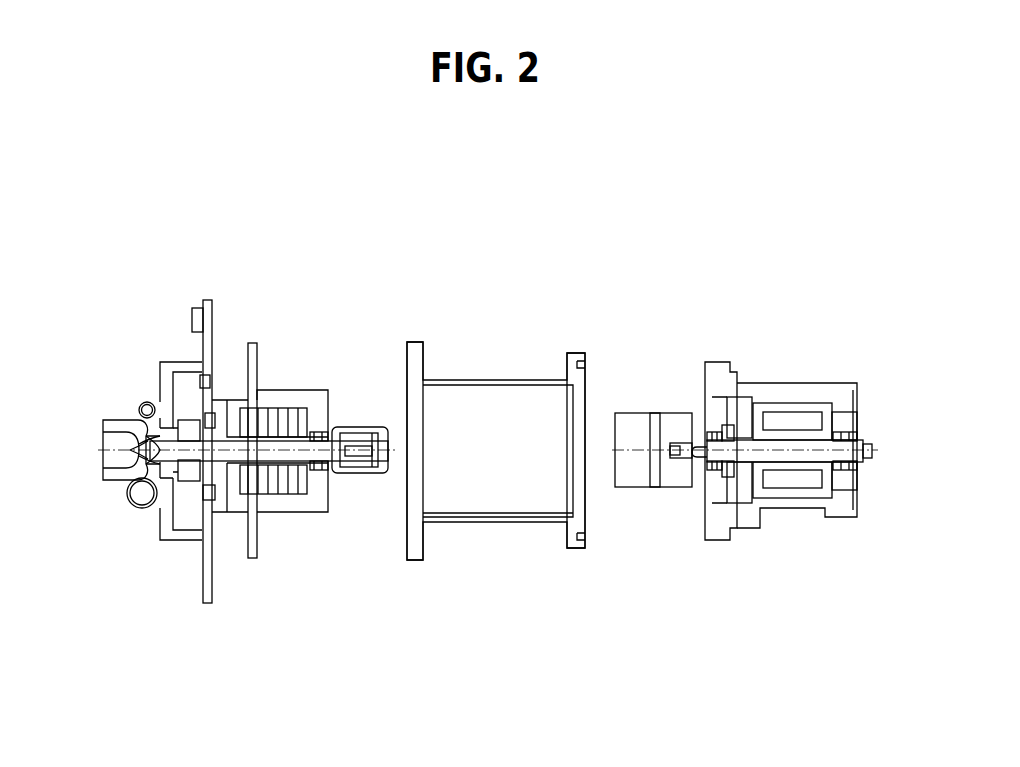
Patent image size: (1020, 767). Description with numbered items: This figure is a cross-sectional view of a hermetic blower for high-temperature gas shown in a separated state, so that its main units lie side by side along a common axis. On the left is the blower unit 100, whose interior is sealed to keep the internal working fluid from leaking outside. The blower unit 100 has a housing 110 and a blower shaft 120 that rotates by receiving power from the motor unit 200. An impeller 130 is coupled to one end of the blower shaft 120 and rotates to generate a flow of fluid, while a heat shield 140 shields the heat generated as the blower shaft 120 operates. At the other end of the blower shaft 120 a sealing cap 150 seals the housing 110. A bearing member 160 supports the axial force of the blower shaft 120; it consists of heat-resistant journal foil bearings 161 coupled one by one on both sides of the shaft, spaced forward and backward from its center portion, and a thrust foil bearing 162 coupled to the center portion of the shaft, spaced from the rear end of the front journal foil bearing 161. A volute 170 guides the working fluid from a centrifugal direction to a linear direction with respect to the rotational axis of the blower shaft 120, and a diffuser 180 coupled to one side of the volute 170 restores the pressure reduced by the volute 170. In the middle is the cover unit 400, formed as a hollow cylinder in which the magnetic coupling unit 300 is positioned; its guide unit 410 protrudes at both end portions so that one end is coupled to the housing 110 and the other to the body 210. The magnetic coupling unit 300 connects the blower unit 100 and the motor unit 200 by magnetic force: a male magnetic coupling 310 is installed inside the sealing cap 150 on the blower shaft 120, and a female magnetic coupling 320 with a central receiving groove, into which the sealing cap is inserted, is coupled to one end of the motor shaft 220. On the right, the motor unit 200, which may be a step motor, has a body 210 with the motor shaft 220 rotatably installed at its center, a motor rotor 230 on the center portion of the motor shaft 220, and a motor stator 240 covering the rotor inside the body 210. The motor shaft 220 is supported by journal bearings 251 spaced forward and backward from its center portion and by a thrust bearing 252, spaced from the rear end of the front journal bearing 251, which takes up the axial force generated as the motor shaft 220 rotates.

The blower unit 100 is at (252, 347).
The housing 110 is at (309, 400).
The blower shaft 120 is at (292, 453).
The impeller 130 is at (138, 405).
The heat shield 140 is at (188, 360).
The sealing cap 150 is at (383, 428).
The bearing member 160 is at (275, 559).
The journal foil bearing 161 is at (204, 500).
The thrust foil bearing 162 is at (221, 515).
The volute 170 is at (135, 475).
The diffuser 180 is at (140, 502).
The motor unit 200 is at (791, 457).
The body 210 is at (818, 395).
The motor shaft 220 is at (828, 468).
The motor rotor 230 is at (785, 468).
The motor stator 240 is at (763, 482).
The journal bearing 251 is at (708, 432).
The thrust bearing 252 is at (724, 428).
The magnetic coupling unit 300 is at (512, 574).
The male magnetic coupling 310 is at (353, 468).
The female magnetic coupling 320 is at (633, 473).
The cover unit 400 is at (505, 420).
The guide unit 410 is at (411, 342).